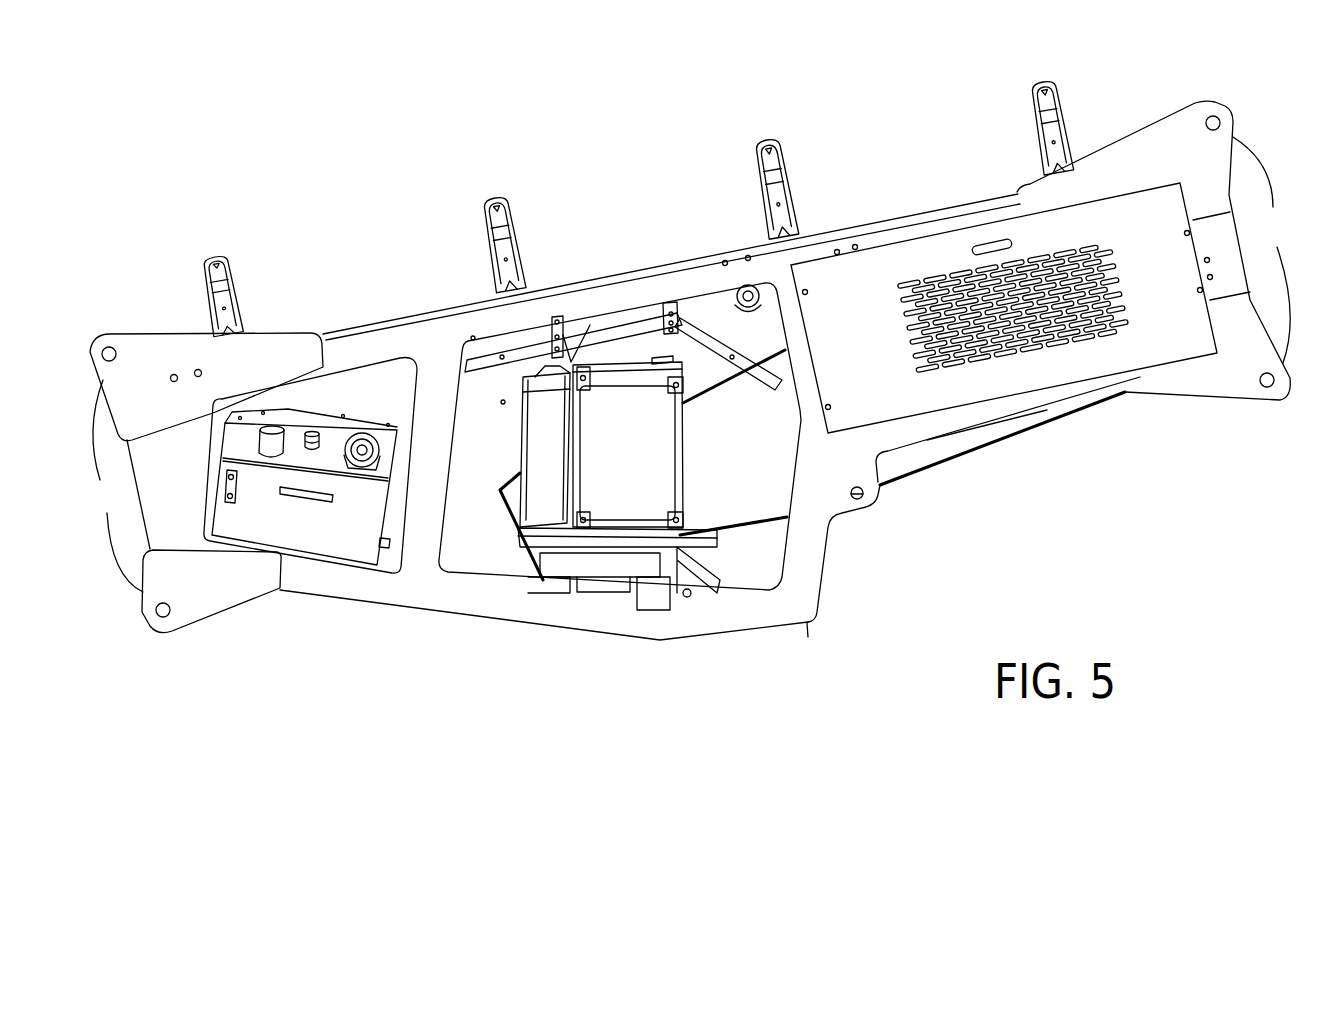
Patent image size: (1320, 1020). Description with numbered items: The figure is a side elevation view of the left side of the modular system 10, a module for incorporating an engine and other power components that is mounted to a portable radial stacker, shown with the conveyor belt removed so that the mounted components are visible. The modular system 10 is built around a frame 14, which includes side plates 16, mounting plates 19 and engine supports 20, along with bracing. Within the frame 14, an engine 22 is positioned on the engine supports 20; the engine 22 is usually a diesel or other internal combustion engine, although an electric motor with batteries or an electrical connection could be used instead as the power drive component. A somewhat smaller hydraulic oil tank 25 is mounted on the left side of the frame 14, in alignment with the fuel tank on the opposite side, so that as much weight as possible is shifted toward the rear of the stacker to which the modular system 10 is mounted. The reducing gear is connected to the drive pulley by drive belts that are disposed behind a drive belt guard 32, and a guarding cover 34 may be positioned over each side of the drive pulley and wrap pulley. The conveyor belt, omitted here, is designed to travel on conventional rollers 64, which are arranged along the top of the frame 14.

The modular system 10 is at (495, 650).
The frame 14 is at (651, 258).
The side plates 16 is at (338, 330).
The mounting plates 19 is at (688, 366).
The engine supports 20 is at (653, 587).
The engine 22 is at (643, 520).
The hydraulic oil tank 25 is at (323, 540).
The drive belt guard 32 is at (742, 462).
The guarding cover 34 is at (855, 372).
The rollers 64 is at (203, 257).